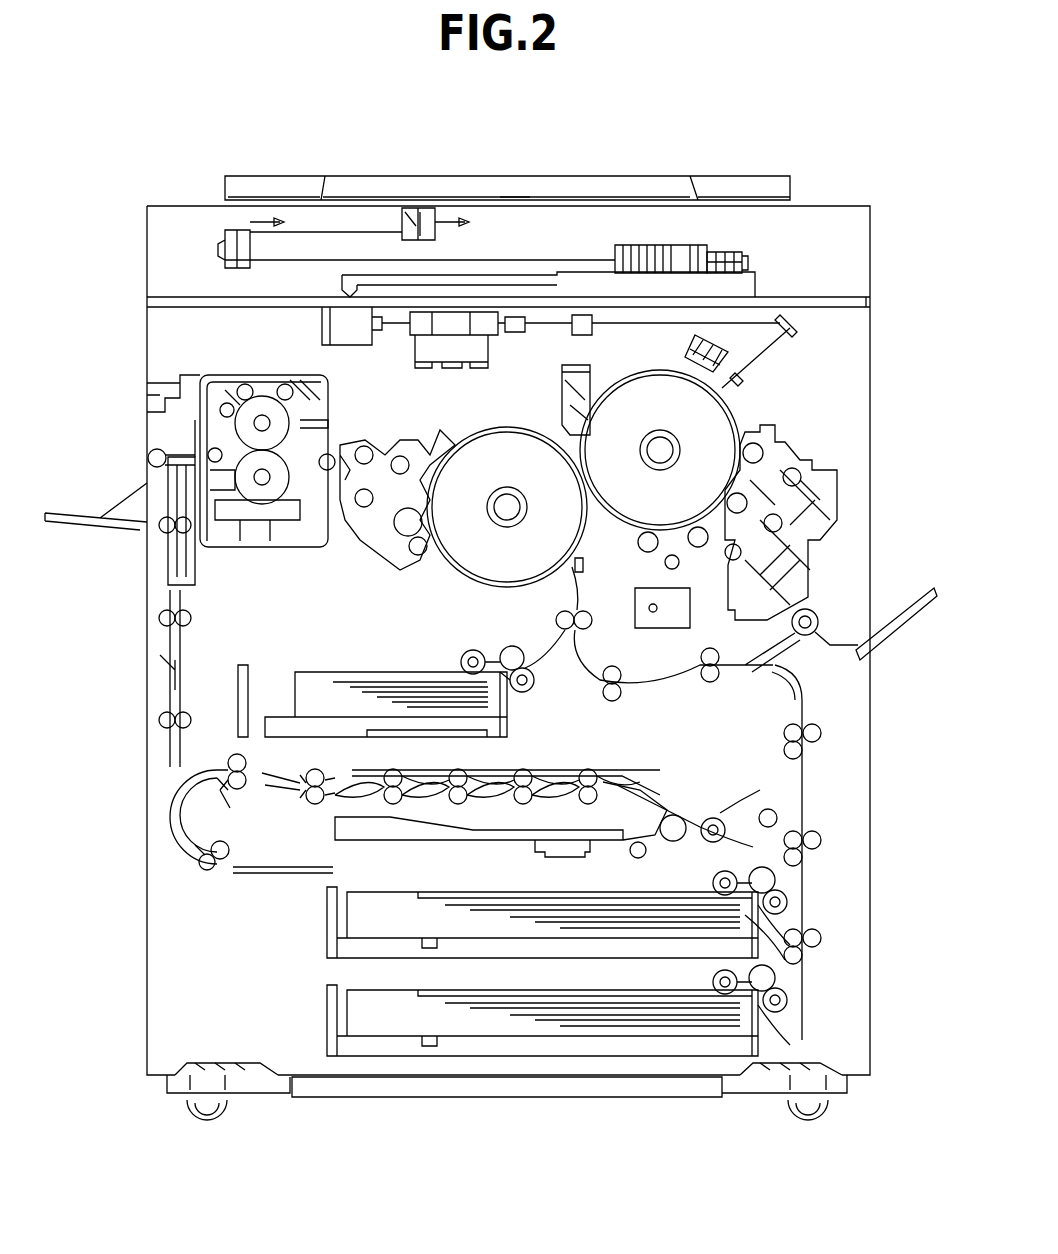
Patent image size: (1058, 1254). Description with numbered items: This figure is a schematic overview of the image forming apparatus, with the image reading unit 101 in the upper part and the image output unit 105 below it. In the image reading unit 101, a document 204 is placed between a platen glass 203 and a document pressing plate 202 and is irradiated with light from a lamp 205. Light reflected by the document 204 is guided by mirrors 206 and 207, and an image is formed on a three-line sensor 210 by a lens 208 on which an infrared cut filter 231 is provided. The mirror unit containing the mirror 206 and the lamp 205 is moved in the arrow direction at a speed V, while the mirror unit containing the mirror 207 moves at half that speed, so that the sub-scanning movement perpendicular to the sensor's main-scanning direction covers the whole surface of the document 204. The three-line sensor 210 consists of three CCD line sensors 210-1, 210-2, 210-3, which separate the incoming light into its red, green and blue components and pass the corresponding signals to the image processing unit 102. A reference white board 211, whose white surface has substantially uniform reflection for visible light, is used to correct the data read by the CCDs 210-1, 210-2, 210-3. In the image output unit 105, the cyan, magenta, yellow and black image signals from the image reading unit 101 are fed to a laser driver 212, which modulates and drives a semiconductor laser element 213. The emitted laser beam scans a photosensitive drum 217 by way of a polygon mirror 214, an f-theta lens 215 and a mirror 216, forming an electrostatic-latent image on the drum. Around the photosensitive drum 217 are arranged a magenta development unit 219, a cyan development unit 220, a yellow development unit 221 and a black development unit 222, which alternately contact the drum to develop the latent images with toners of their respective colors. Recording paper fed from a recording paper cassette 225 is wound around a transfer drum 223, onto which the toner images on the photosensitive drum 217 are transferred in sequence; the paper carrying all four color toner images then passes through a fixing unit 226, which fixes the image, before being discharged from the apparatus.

The image reading unit 101 is at (951, 283).
The image processing unit 102 is at (745, 283).
The image output unit 105 is at (951, 550).
The document pressing plate 202 is at (568, 176).
The platen glass 203 is at (645, 176).
The document 204 is at (513, 200).
The lamp 205 is at (410, 210).
The mirror 206 is at (426, 210).
The mirror 207 is at (225, 245).
The lens 208 is at (655, 247).
The three-line sensor 210 is at (718, 252).
The CCD line sensor 210-1 is at (742, 255).
The CCD line sensor 210-2 is at (742, 261).
The CCD line sensor 210-3 is at (742, 267).
The reference white board 211 is at (272, 197).
The laser driver 212 is at (322, 325).
The semiconductor laser element 213 is at (375, 340).
The polygon mirror 214 is at (490, 340).
The f-θ lens 215 is at (592, 333).
The mirror 216 is at (797, 332).
The photosensitive drum 217 is at (735, 407).
The magenta development unit 219 is at (697, 598).
The cyan development unit 220 is at (745, 505).
The yellow development unit 221 is at (763, 455).
The black development unit 222 is at (642, 547).
The transfer drum 223 is at (467, 583).
The recording paper cassette 225 is at (740, 1050).
The fixing unit 226 is at (260, 547).
The infrared cut filter 231 is at (622, 245).